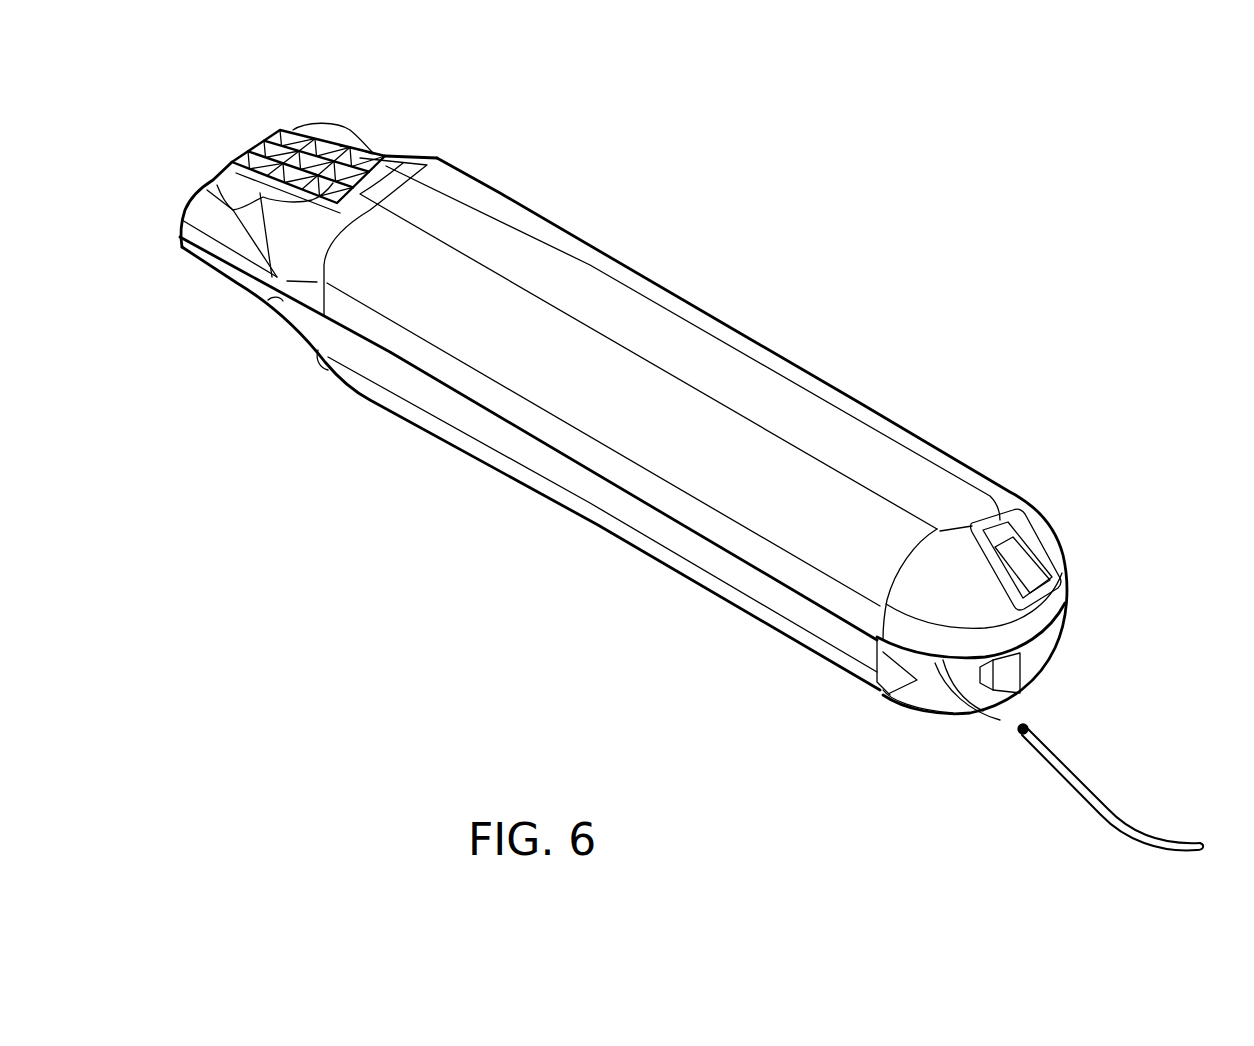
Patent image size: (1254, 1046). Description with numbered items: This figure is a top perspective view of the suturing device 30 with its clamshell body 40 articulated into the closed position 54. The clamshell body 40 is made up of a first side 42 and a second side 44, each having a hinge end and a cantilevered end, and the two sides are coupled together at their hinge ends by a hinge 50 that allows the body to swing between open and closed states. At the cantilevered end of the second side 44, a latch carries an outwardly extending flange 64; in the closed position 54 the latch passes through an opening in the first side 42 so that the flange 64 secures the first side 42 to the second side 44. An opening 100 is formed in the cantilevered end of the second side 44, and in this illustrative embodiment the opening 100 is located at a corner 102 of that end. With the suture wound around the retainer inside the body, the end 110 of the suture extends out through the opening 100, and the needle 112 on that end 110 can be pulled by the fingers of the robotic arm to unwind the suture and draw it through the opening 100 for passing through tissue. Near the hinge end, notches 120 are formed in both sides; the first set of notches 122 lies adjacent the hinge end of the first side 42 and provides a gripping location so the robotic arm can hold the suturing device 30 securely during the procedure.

The suturing device 30 is at (668, 458).
The closed position 54 is at (604, 433).
The clamshell body 40 is at (430, 160).
The first side 42 is at (803, 386).
The second side 44 is at (600, 527).
The hinge 50 is at (208, 226).
The flange 64 is at (1025, 551).
The opening 100 is at (953, 711).
The corner 102 is at (917, 697).
The end of the suture 110 is at (1000, 716).
The needle 112 is at (1104, 808).
The notches 120 is at (280, 131).
The first set of notches 122 is at (236, 160).